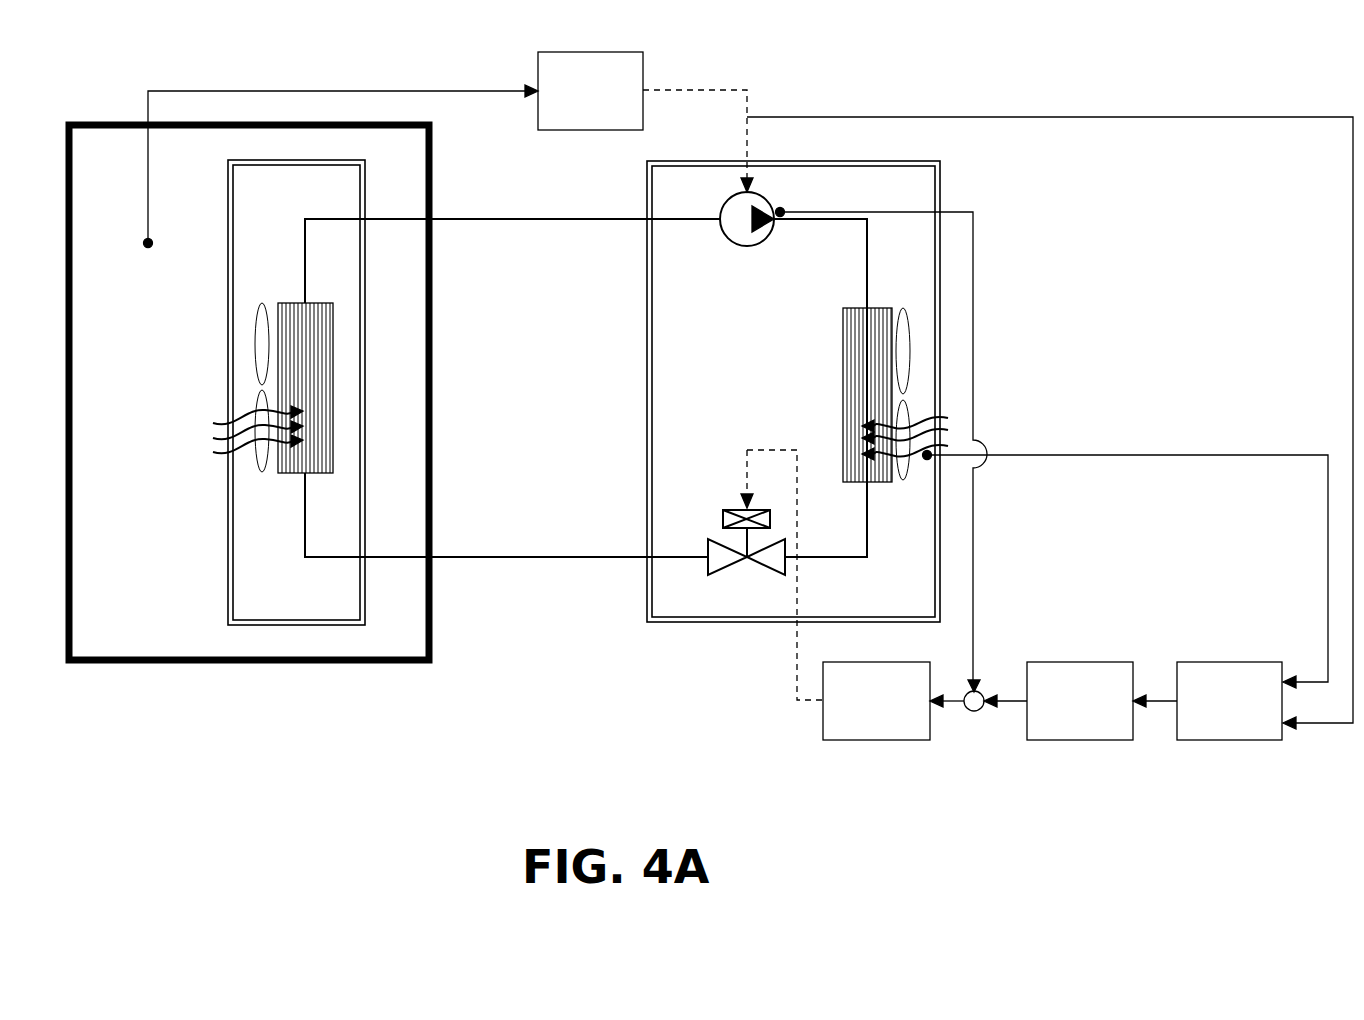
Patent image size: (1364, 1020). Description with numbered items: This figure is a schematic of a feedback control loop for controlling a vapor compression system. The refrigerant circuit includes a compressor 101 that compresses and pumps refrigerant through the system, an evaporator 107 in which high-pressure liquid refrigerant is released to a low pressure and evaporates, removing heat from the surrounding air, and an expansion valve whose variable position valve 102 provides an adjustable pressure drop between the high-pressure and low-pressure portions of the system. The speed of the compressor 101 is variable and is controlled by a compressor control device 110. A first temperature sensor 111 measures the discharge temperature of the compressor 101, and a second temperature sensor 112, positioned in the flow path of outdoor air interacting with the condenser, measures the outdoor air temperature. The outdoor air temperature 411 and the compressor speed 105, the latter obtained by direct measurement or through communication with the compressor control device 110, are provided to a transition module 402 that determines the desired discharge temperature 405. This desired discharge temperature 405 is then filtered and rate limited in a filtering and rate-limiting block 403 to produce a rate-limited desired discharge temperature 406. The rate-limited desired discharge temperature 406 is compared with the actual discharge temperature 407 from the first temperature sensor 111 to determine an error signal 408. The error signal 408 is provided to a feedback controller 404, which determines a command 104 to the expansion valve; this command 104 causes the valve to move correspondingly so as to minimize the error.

The compressor 101 is at (755, 247).
The variable position valve 102 is at (730, 568).
The commands 104 is at (797, 690).
The compressor speed 105 is at (893, 117).
The evaporator 107 is at (333, 390).
The compressor control device 110 is at (643, 55).
The first temperature sensor 111 is at (780, 210).
The second temperature sensor 112 is at (930, 460).
The transition module 402 is at (1237, 740).
The compensation block 403 is at (1073, 740).
The feedback controller 404 is at (877, 740).
The desired discharge temperature 405 is at (1160, 690).
The rate-limited desired discharge temperature 406 is at (1020, 690).
The actual discharge temperature 407 is at (973, 230).
The error signal 408 is at (955, 708).
The outdoor air temperature 411 is at (1073, 455).